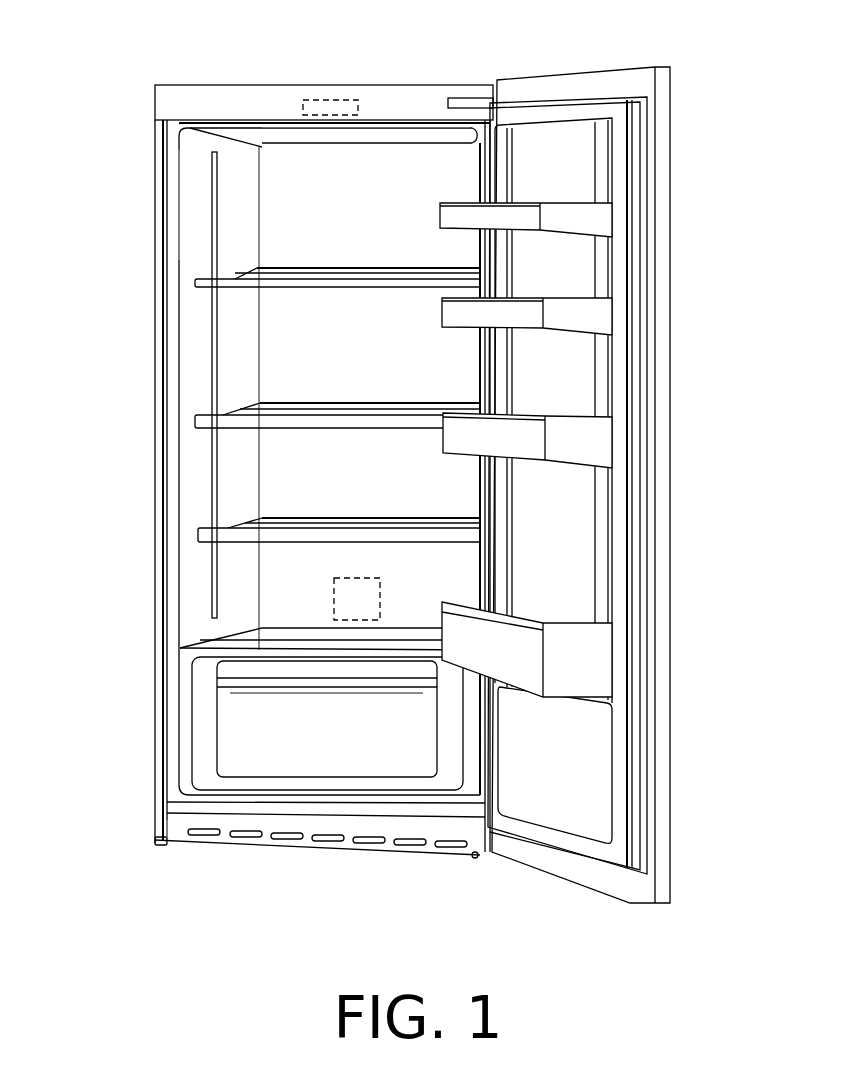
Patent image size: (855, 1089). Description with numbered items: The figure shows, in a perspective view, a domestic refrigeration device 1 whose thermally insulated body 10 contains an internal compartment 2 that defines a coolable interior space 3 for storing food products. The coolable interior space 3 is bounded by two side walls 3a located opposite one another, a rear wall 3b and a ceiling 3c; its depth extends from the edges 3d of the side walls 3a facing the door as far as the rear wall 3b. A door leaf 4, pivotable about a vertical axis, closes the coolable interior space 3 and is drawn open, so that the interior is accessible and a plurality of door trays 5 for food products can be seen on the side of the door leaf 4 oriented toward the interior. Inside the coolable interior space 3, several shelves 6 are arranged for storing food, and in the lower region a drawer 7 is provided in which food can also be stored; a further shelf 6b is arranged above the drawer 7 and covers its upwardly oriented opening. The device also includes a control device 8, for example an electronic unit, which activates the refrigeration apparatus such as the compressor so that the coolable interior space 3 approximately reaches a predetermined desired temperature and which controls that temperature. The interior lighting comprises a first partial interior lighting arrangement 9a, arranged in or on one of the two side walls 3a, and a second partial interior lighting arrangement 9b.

The domestic refrigeration device 1 is at (143, 141).
The internal compartment 2 is at (197, 317).
The coolable interior space 3 is at (272, 246).
The side wall 3a is at (185, 213).
The rear wall 3b is at (373, 167).
The ceiling 3c is at (332, 133).
The edge of the side wall 3d is at (172, 543).
The door leaf 4 is at (660, 837).
The door tray 5 is at (587, 223).
The shelf 6 is at (312, 292).
The further shelf 6b is at (202, 645).
The drawer 7 is at (309, 739).
The control device 8 is at (353, 597).
The first partial interior lighting arrangement 9a is at (218, 197).
The second partial interior lighting arrangement 9b is at (328, 110).
The thermally insulated body 10 is at (177, 737).